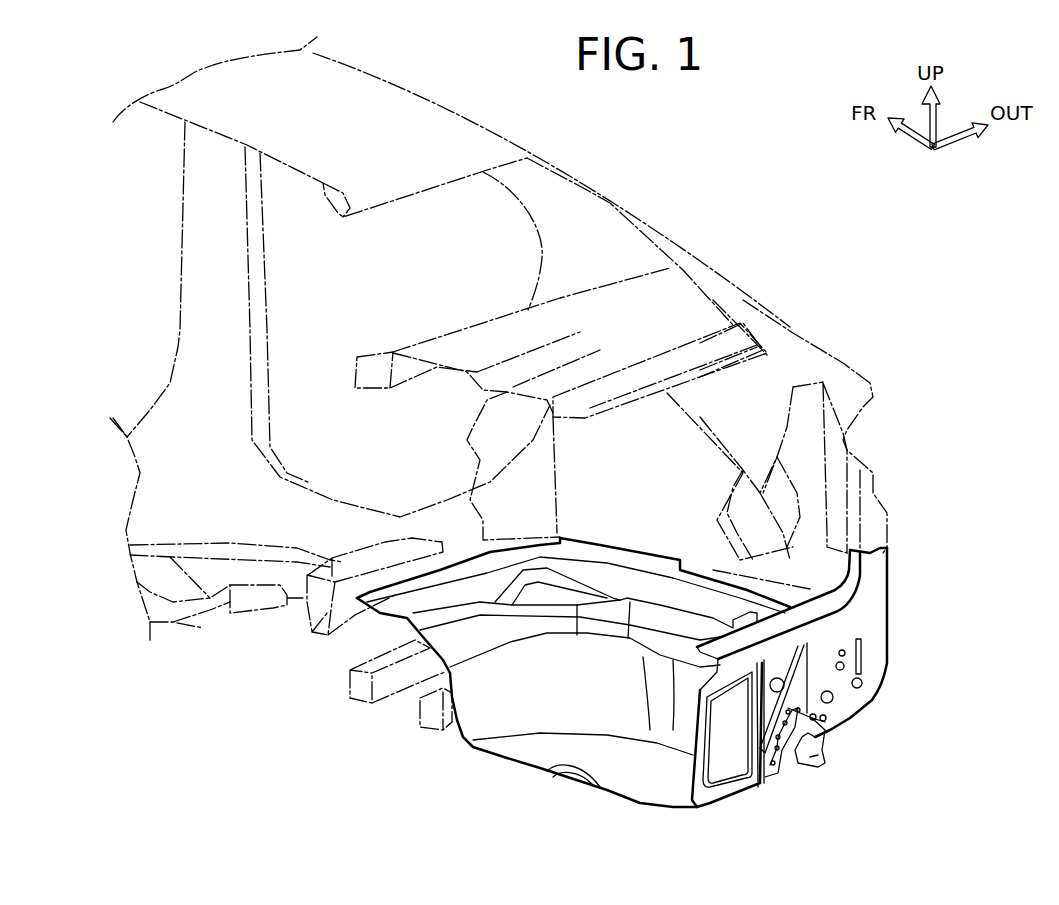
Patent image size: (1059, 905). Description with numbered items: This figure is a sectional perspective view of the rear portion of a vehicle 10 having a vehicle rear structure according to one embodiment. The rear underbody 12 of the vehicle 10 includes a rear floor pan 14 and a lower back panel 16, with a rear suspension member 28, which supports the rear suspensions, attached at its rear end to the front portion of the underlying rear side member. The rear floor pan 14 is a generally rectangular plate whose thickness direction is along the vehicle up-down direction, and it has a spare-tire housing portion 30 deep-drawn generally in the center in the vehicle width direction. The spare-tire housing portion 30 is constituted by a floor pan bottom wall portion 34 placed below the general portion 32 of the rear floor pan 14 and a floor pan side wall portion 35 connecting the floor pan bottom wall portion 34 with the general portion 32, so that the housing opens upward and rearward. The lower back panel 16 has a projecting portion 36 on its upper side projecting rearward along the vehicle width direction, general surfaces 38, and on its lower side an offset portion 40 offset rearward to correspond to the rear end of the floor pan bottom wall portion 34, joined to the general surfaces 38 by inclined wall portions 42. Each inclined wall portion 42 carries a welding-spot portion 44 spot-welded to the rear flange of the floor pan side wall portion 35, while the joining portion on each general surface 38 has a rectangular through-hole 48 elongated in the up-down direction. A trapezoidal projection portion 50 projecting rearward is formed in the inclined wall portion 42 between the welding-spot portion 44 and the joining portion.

The vehicle 10 is at (608, 203).
The rear underbody 12 is at (483, 763).
The rear floor pan 14 is at (530, 770).
The lower back panel 16 is at (873, 650).
The rear suspension member 28 is at (437, 735).
The spare-tire housing portion 30 is at (542, 712).
The general portion 32 is at (697, 610).
The floor pan bottom wall portion 34 is at (640, 787).
The floor pan side wall portion 35 is at (512, 659).
The projecting portion 36 is at (820, 620).
The general surfaces 38 is at (867, 628).
The offset portion 40 is at (730, 790).
The inclined wall portions 42 is at (790, 688).
The welding-spot portion 44 is at (778, 753).
The through-hole 48 is at (867, 667).
The projection portions 50 is at (822, 738).